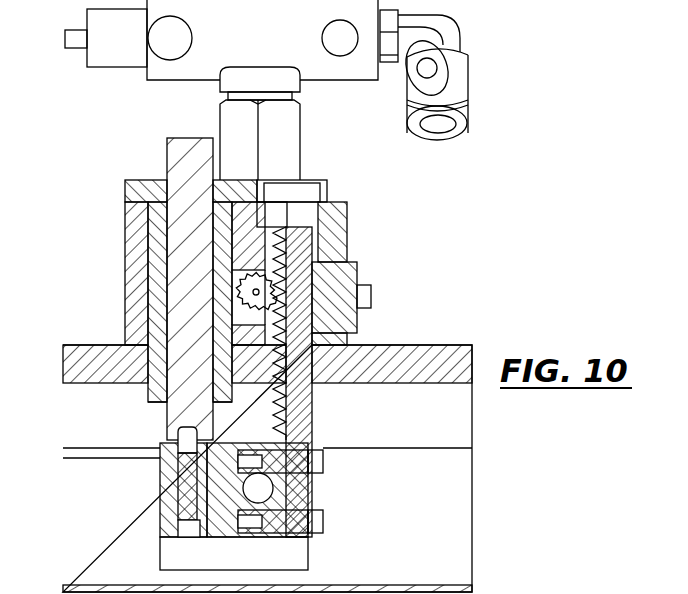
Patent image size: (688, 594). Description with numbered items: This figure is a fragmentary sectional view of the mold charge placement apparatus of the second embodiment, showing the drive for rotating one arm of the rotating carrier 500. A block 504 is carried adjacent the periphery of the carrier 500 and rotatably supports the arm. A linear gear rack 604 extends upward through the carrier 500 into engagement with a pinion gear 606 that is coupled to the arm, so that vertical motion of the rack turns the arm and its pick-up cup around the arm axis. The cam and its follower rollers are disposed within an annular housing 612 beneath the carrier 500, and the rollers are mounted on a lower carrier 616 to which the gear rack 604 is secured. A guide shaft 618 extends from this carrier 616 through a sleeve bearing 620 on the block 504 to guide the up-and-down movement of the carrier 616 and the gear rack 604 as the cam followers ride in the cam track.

The carrier 500 is at (425, 348).
The block 504 is at (342, 220).
The linear gear rack 604 is at (297, 422).
The pinion gear 606 is at (262, 297).
The annular housing 612 is at (458, 590).
The carrier 616 is at (217, 510).
The guide shaft 618 is at (180, 236).
The sleeve bearing 620 is at (155, 290).